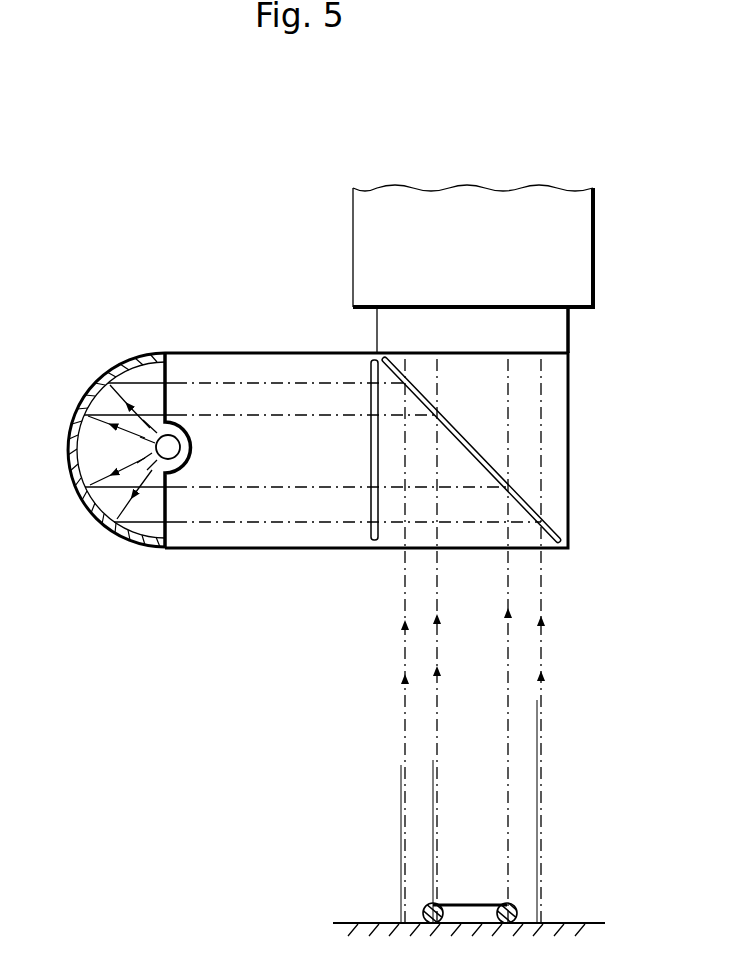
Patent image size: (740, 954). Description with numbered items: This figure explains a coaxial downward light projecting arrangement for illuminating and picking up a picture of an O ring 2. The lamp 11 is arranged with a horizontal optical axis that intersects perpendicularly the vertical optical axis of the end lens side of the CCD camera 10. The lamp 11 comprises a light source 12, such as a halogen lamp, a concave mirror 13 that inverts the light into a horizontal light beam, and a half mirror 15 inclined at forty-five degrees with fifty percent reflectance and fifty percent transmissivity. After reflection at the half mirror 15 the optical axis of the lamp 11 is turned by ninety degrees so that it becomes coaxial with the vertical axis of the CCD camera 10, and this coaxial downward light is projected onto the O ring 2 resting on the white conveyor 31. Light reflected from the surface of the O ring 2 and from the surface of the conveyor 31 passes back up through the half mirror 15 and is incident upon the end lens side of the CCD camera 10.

The CCD camera 10 is at (350, 226).
The lamp 11 is at (225, 351).
The light source 12 is at (192, 447).
The concave mirror 13 is at (98, 518).
The half mirror 15 is at (528, 497).
The conveyor 31 is at (373, 922).
The O ring 2 is at (517, 905).